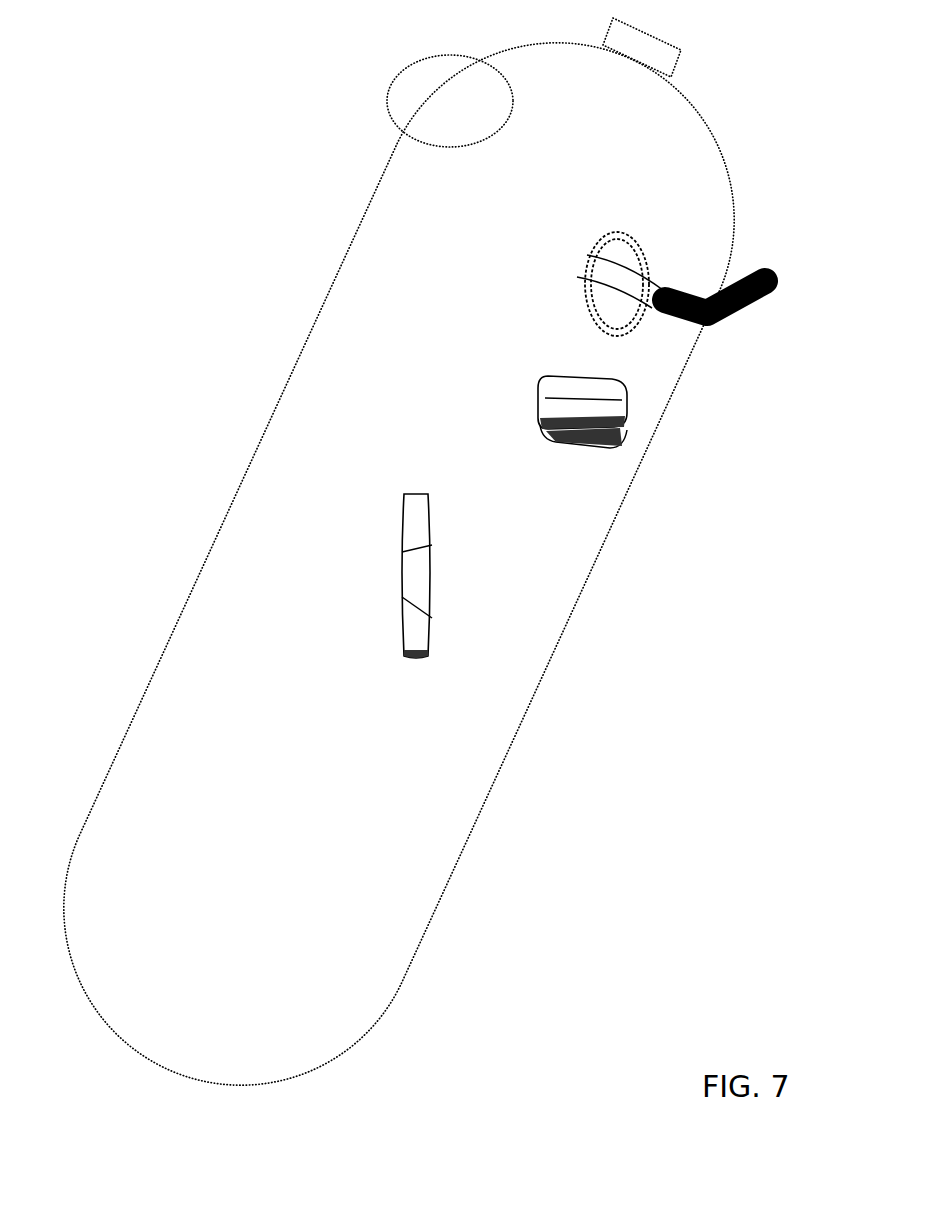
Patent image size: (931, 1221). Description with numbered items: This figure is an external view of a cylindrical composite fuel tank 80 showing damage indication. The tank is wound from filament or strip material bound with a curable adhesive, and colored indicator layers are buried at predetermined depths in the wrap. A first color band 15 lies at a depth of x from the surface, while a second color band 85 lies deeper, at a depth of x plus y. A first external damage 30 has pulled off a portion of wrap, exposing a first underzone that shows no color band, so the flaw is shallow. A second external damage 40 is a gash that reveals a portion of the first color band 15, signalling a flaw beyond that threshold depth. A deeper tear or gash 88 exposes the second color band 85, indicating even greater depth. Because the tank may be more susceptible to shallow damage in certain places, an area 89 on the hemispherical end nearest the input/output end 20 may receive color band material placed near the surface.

The composite tank 80 is at (240, 398).
The area susceptible to shallow damage 89 is at (388, 88).
The input/output end 20 is at (605, 33).
The first color band 15 is at (610, 290).
The first external damage 30 is at (570, 243).
The second external damage 40 is at (588, 378).
The tear or gash 88 is at (403, 535).
The second color band 85 is at (428, 575).